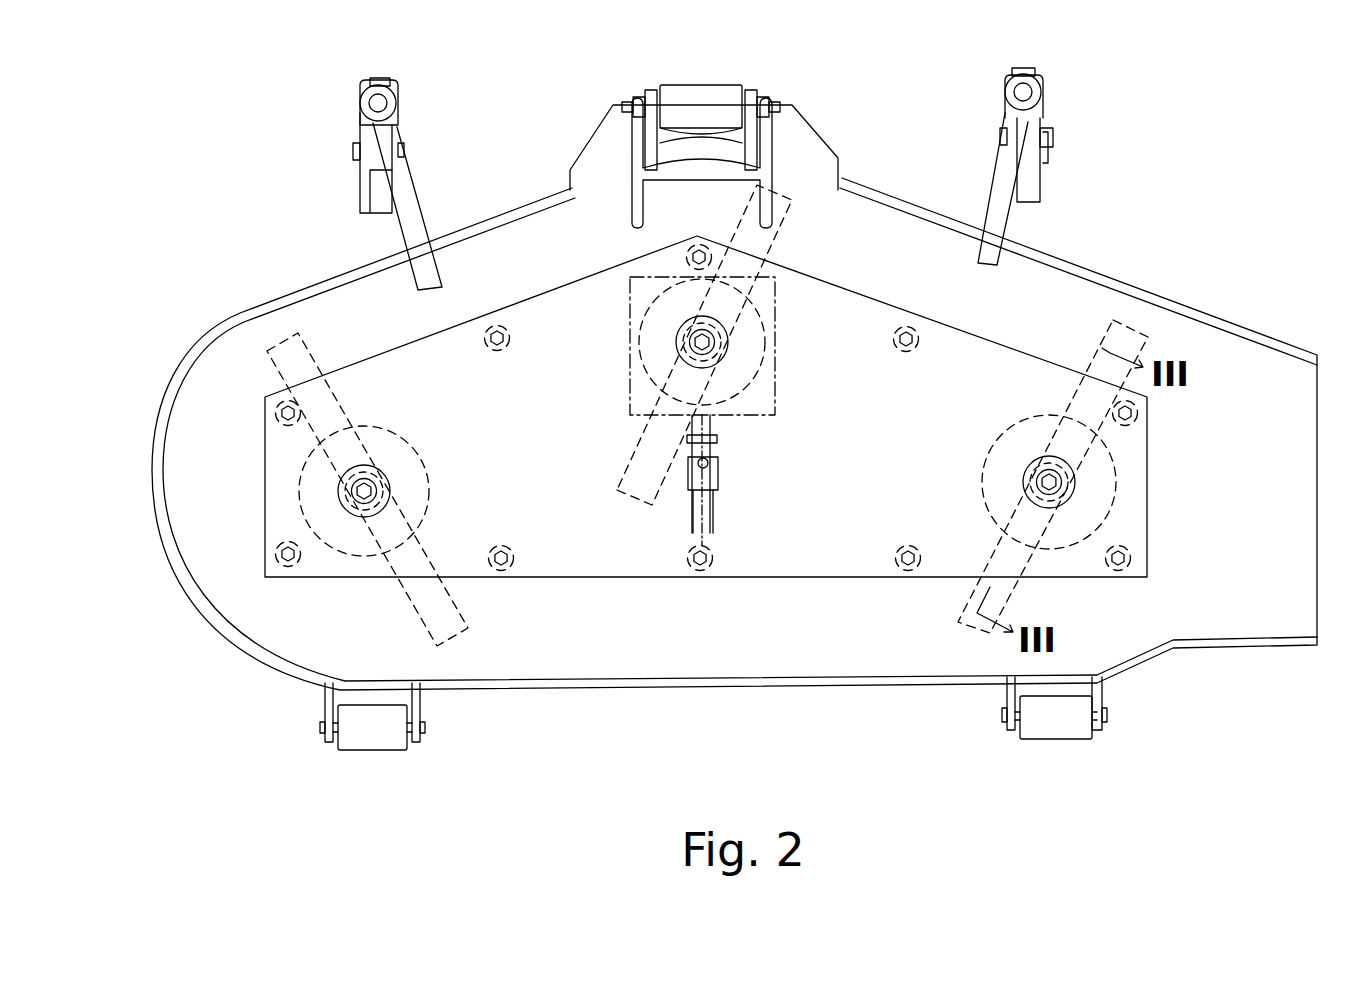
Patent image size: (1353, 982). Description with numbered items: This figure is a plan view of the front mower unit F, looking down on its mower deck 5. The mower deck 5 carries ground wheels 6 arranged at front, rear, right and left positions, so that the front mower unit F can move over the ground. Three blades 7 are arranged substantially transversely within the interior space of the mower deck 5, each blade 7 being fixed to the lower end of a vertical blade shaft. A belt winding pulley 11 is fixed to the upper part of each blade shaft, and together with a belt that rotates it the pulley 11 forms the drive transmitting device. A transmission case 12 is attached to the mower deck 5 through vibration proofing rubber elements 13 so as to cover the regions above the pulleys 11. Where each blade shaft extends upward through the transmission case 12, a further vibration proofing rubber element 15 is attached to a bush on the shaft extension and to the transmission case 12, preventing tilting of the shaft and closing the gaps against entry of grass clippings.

The mower deck 5 is at (278, 298).
The ground wheels 6 is at (722, 92).
The blades 7 is at (307, 350).
The belt winding pulley 11 is at (430, 482).
The transmission case 12 is at (850, 297).
The vibration proofing rubber elements 13 is at (1173, 463).
The vibration proofing rubber element 15 is at (350, 470).
The front mower unit F is at (1188, 233).